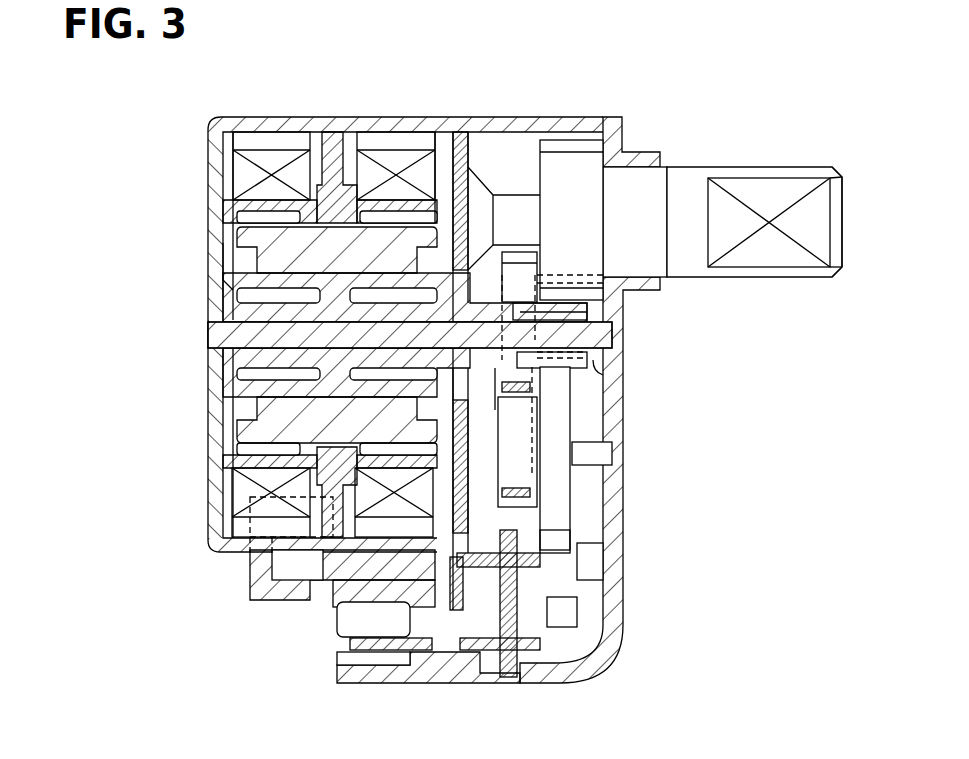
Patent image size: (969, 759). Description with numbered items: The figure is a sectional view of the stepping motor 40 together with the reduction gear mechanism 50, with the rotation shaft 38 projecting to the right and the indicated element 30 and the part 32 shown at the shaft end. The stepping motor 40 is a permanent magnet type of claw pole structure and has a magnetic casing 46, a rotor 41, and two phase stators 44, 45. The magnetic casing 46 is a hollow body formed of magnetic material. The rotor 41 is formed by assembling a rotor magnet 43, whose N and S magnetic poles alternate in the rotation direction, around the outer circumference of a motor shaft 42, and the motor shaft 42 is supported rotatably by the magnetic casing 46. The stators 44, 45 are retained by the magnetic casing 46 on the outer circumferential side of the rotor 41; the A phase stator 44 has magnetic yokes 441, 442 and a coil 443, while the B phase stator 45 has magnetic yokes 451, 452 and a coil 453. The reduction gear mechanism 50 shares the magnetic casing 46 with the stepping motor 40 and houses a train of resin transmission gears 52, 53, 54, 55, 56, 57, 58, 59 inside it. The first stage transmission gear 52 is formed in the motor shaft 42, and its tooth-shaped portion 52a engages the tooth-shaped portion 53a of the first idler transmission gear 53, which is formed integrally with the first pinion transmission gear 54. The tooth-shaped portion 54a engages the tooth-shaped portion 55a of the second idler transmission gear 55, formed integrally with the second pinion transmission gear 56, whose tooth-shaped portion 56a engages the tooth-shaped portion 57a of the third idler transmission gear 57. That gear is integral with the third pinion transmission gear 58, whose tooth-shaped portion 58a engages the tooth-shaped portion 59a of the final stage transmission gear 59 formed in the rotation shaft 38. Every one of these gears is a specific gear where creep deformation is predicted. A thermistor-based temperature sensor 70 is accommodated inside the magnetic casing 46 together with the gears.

The joint / output shaft 30 is at (832, 167).
The shaft 32 is at (720, 277).
The rotation shaft 38 is at (775, 222).
The stepping motor 40 is at (232, 433).
The rotor 41 is at (105, 260).
The motor shaft 42 is at (243, 307).
The rotor magnet 43 is at (247, 260).
The stator 44 is at (382, 78).
The magnetic yoke 441 is at (234, 210).
The magnetic yoke 442 is at (303, 213).
The coil 443 is at (317, 140).
The stator 45 is at (553, 62).
The magnetic yoke 451 is at (370, 165).
The magnetic yoke 452 is at (473, 147).
The coil 453 is at (410, 140).
The magnetic casing 46 is at (217, 203).
The reduction gear mechanism 50 is at (559, 556).
The first stage transmission gear 52 is at (537, 267).
The tooth-shaped portion 52a is at (593, 365).
The first idler transmission gear 53 is at (560, 508).
The tooth-shaped portion 53a is at (505, 385).
The first pinion transmission gear 54 is at (405, 492).
The tooth-shaped portion 54a is at (558, 522).
The second idler transmission gear 55 is at (487, 555).
The tooth-shaped portion 55a is at (515, 543).
The second pinion transmission gear 56 is at (532, 475).
The tooth-shaped portion 56a is at (505, 400).
The third idler transmission gear 57 is at (555, 303).
The tooth-shaped portion 57a is at (505, 395).
The third pinion transmission gear 58 is at (590, 330).
The tooth-shaped portion 58a is at (627, 312).
The final stage transmission gear 59 is at (592, 177).
The tooth-shaped portion 59a is at (577, 150).
The temperature sensor 70 is at (560, 627).